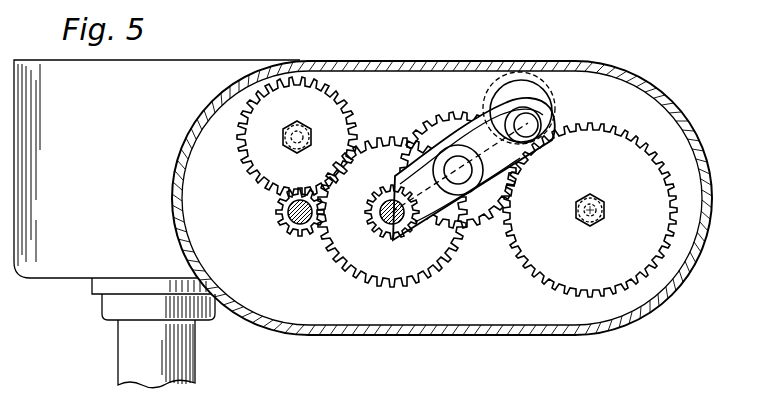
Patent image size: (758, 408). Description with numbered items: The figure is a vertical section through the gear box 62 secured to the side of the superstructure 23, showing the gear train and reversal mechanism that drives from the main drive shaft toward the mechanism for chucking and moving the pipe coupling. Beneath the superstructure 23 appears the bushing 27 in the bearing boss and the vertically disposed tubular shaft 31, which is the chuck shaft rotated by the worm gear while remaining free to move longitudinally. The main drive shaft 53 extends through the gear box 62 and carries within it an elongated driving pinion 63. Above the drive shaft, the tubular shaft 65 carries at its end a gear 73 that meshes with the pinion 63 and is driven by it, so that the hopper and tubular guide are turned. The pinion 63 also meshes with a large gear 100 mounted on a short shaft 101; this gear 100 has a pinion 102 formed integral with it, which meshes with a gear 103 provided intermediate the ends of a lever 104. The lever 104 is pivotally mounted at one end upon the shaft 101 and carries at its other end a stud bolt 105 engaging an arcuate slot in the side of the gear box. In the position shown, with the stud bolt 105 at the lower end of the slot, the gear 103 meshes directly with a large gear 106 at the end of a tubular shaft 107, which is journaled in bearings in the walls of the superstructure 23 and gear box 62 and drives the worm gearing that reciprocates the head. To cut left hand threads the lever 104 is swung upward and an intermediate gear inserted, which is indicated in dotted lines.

The superstructure 23 is at (157, 177).
The bushing 27 is at (108, 306).
The tubular shaft 31 is at (124, 357).
The main drive shaft 53 is at (297, 219).
The gear box 62 is at (222, 104).
The driving pinion 63 is at (288, 222).
The tubular shaft 65 is at (285, 146).
The gear 73 is at (333, 123).
The large gear 100 is at (352, 258).
The short shaft 101 is at (393, 223).
The pinion 102 is at (378, 215).
The gear 103 is at (440, 123).
The lever 104 is at (493, 215).
The stud bolt 105 is at (522, 130).
The large gear 106 is at (590, 210).
The tubular shaft 107 is at (603, 208).